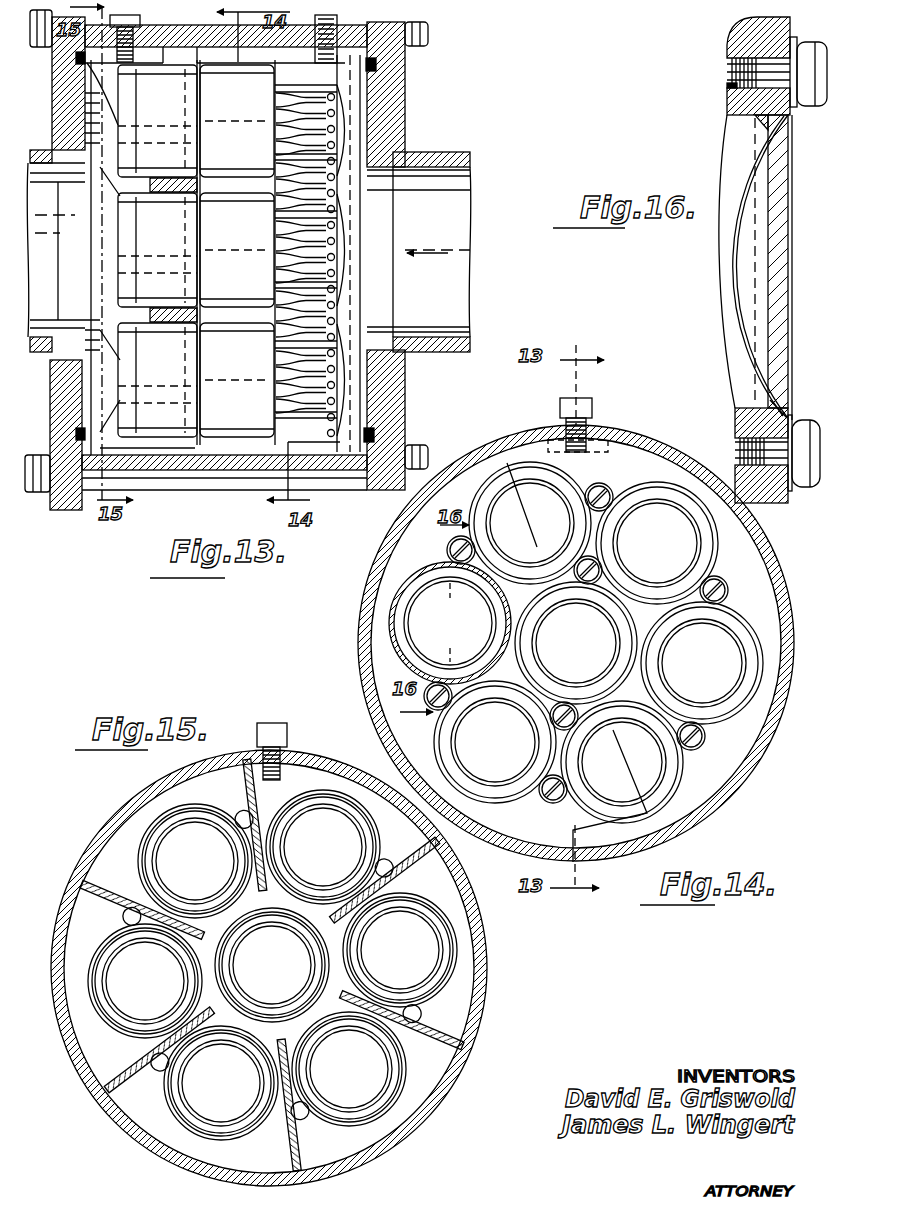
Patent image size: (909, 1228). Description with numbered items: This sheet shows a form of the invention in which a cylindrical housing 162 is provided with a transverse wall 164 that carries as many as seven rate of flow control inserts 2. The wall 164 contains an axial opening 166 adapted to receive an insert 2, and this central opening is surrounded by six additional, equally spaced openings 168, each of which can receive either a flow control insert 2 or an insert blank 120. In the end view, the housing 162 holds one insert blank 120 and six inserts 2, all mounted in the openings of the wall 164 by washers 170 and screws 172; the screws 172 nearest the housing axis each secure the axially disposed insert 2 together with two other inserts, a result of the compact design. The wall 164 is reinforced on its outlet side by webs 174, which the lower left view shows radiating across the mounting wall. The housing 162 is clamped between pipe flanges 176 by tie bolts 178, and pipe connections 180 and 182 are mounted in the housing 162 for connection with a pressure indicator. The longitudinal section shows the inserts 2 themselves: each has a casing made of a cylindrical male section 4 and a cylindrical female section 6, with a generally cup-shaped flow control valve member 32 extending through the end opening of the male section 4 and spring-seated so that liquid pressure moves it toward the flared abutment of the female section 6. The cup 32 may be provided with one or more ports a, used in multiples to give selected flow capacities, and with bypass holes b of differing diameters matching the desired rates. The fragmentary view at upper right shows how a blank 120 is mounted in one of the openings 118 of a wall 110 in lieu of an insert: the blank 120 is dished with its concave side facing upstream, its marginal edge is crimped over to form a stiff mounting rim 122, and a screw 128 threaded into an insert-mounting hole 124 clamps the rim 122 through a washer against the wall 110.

In FIG. 13, the rate of flow control insert 2 is at (349, 232).
In FIG. 14, the rate of flow control insert 2 is at (680, 548).
In FIG. 15, the rate of flow control insert 2 is at (178, 842).
In FIG. 13, the cylindrical male section 4 is at (232, 94).
In FIG. 13, the cylindrical female section 6 is at (168, 155).
In FIG. 13, the flow control valve member 32 is at (303, 107).
In FIG. 16, the wall 110 is at (740, 42).
In FIG. 16, the circular opening 118 is at (748, 400).
In FIG. 16, the insert blank 120 is at (740, 325).
In FIG. 14, the insert blank 120 is at (470, 636).
In FIG. 15, the insert blank 120 is at (415, 946).
In FIG. 16, the mounting rim 122 is at (792, 414).
In FIG. 14, the mounting rim 122 is at (437, 578).
In FIG. 16, the insert-mounting hole 124 is at (728, 88).
In FIG. 16, the screw 128 is at (735, 72).
In FIG. 13, the cylindrical housing 162 is at (207, 472).
In FIG. 14, the cylindrical housing 162 is at (355, 644).
In FIG. 15, the cylindrical housing 162 is at (117, 808).
In FIG. 13, the transverse wall 164 is at (196, 446).
In FIG. 14, the transverse wall 164 is at (380, 569).
In FIG. 15, the transverse wall 164 is at (462, 1002).
In FIG. 15, the axial opening 166 is at (292, 922).
In FIG. 15, the additional opening 168 is at (142, 851).
In FIG. 14, the washer 170 is at (612, 519).
In FIG. 14, the screw 172 is at (601, 492).
In FIG. 13, the web 174 is at (112, 88).
In FIG. 15, the web 174 is at (247, 801).
In FIG. 13, the pipe flange 176 is at (406, 98).
In FIG. 13, the tie bolt 178 is at (429, 32).
In FIG. 13, the pipe connection 180 is at (330, 50).
In FIG. 13, the pipe connection 182 is at (100, 68).
In FIG. 14, the pipe connection 182 is at (562, 404).
In FIG. 15, the pipe connection 182 is at (270, 722).
In FIG. 13, the port a is at (268, 128).
In FIG. 13, the bypass hole b is at (328, 200).